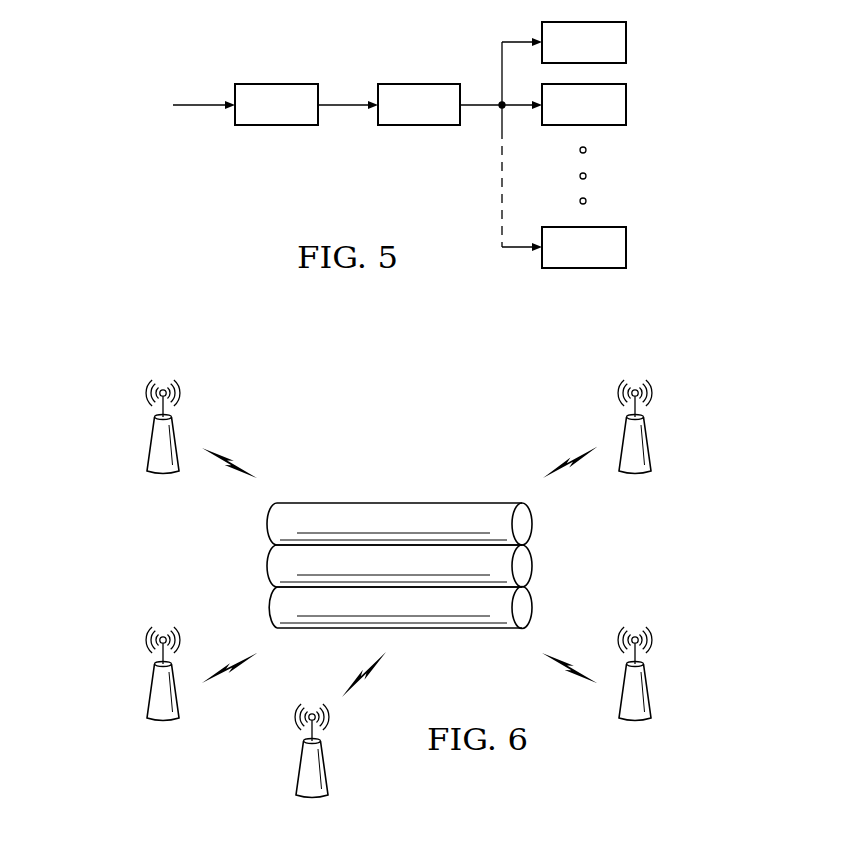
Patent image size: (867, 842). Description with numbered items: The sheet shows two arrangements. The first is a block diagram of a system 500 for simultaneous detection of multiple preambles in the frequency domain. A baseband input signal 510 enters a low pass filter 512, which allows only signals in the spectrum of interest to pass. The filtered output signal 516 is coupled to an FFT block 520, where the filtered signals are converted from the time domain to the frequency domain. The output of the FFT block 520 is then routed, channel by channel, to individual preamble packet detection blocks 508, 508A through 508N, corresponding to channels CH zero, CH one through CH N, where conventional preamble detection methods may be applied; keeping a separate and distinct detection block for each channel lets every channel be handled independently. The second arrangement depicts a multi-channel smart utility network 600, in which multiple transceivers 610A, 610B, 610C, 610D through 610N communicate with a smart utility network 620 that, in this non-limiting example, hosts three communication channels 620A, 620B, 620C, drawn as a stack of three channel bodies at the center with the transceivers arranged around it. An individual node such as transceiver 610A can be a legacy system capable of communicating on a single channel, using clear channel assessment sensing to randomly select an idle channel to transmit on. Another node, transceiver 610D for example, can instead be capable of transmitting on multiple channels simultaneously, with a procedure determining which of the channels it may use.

In FIG. 5, the system 500 is at (225, 190).
In FIG. 5, the baseband input signal 510 is at (203, 100).
In FIG. 5, the low pass filter 512 is at (275, 84).
In FIG. 5, the filtered output signal 516 is at (348, 101).
In FIG. 5, the FFT block 520 is at (420, 84).
In FIG. 5, the preamble packet detection block 508 is at (626, 31).
In FIG. 5, the preamble packet detection block 508A is at (626, 91).
In FIG. 5, the preamble packet detection block 508N is at (626, 261).
In FIG. 6, the multi-channel smart utility network 600 is at (460, 420).
In FIG. 6, the smart utility network 620 is at (397, 500).
In FIG. 6, the communication channel 620A is at (268, 522).
In FIG. 6, the communication channel 620B is at (268, 565).
In FIG. 6, the communication channel 620C is at (268, 605).
In FIG. 6, the transceiver 610A is at (152, 445).
In FIG. 6, the transceiver 610B is at (151, 688).
In FIG. 6, the transceiver 610C is at (300, 765).
In FIG. 6, the transceiver 610D is at (649, 688).
In FIG. 6, the transceiver 610N is at (649, 441).